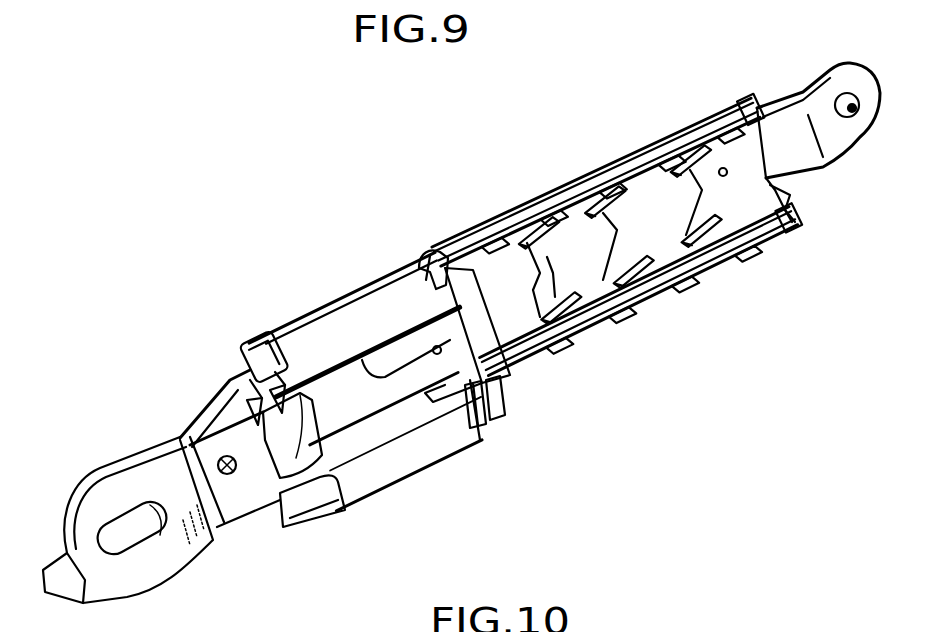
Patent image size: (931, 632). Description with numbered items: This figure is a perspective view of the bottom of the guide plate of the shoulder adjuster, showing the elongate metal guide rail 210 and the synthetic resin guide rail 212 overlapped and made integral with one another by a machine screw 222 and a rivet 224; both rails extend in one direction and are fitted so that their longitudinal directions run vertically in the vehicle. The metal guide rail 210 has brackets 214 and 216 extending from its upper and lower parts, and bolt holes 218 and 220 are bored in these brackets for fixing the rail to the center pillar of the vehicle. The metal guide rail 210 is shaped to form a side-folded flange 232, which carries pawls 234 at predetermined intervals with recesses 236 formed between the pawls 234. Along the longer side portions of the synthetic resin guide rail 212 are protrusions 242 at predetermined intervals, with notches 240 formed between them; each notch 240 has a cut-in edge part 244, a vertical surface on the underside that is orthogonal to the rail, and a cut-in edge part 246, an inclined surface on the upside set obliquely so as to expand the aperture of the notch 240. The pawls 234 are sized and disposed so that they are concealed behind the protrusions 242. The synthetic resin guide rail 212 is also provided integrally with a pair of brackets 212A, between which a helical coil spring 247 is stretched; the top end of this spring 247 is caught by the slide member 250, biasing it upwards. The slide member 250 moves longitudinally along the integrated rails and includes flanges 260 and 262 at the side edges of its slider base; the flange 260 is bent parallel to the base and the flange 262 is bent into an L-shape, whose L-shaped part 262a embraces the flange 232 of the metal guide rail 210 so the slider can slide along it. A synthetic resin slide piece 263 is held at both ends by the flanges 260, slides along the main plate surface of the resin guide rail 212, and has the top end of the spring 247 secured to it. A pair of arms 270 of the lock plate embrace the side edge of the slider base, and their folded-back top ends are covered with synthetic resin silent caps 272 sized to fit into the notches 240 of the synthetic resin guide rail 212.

The metal guide rail 210 is at (622, 138).
The synthetic resin guide rail 212 is at (785, 222).
The brackets 212A is at (233, 428).
The bracket 214 is at (103, 465).
The bracket 216 is at (815, 73).
The bolt hole 218 is at (140, 533).
The bolt hole 220 is at (857, 113).
The machine screw 222 is at (215, 462).
The rivet 224 is at (790, 195).
The side-folded flange 232 is at (743, 96).
The pawls 234 is at (583, 193).
The recesses 236 is at (607, 170).
The notches 240 is at (652, 175).
The protrusions 242 is at (661, 252).
The cut-in edge part (vertical surface) 244 is at (666, 142).
The cut-in edge part (inclined surface) 246 is at (703, 150).
The helical coil spring 247 is at (262, 478).
The slide member 250 is at (265, 308).
The flange 260 is at (427, 240).
The flange 262 is at (277, 327).
The L-shaped part 262a is at (320, 330).
The synthetic resin slide piece 263 is at (427, 343).
The arms 270 is at (381, 286).
The synthetic resin caps (silent caps) 272 is at (381, 283).